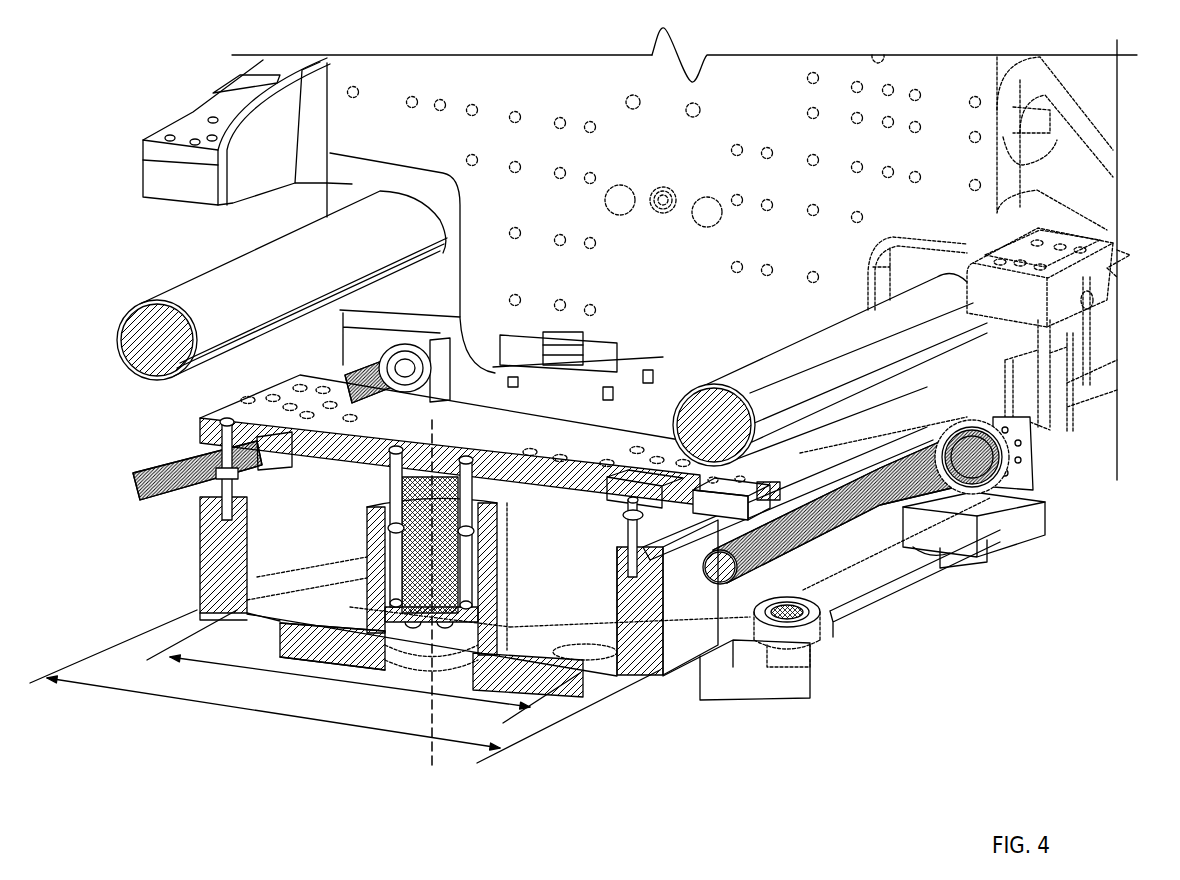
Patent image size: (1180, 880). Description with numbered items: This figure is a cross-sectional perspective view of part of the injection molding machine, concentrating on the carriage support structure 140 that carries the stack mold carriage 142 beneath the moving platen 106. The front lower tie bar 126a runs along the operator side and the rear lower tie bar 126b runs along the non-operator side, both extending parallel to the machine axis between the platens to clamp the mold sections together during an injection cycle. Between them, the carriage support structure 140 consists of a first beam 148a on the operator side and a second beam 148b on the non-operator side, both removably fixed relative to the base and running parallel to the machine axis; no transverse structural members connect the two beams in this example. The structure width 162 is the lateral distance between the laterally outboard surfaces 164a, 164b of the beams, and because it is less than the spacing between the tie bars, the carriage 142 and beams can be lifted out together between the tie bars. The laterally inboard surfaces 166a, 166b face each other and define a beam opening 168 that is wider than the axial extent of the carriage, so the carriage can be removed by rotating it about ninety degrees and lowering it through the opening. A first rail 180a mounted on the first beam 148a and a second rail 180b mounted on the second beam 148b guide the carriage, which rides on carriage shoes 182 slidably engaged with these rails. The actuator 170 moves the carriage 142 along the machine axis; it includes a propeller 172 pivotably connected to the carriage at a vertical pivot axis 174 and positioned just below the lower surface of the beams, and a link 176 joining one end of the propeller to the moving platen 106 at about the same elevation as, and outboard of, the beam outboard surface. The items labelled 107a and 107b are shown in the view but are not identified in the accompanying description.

The moving platen 106 is at (727, 82).
The bearing block 107a is at (897, 510).
The bearing 107b is at (1005, 470).
The front lower tie bar 126a is at (150, 372).
The rear lower tie bar 126b is at (680, 407).
The carriage support structure 140 is at (603, 752).
The stack mold carriage 142 is at (480, 437).
The first beam 148a is at (207, 557).
The second beam 148b is at (627, 610).
The structure width 162 is at (350, 730).
The laterally outboard surface 164a is at (197, 577).
The laterally outboard surface 164b is at (698, 640).
The laterally inboard surface 166a is at (300, 560).
The laterally inboard surface 166b is at (617, 583).
The beam opening 168 is at (340, 683).
The actuator 170 is at (823, 708).
The propeller 172 is at (287, 627).
The vertical pivot axis 174 is at (433, 748).
The link 176 is at (887, 600).
The first rail 180a is at (227, 473).
The second rail 180b is at (637, 513).
The carriage shoe 182 is at (733, 520).